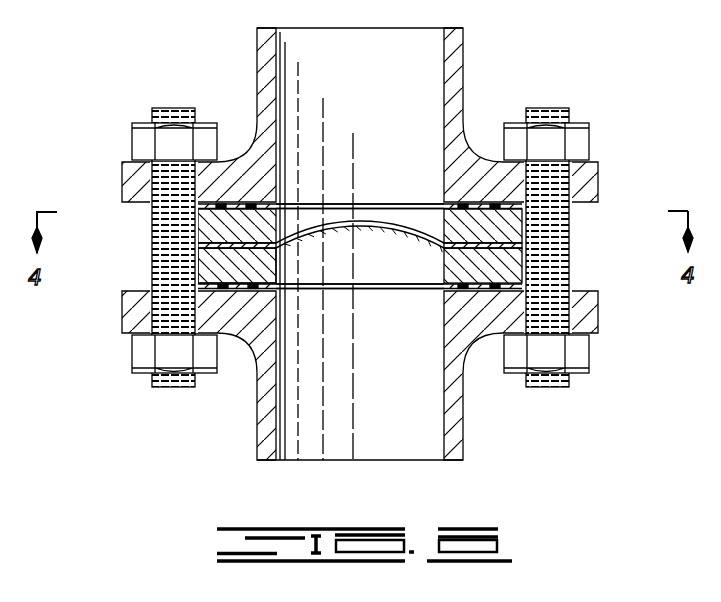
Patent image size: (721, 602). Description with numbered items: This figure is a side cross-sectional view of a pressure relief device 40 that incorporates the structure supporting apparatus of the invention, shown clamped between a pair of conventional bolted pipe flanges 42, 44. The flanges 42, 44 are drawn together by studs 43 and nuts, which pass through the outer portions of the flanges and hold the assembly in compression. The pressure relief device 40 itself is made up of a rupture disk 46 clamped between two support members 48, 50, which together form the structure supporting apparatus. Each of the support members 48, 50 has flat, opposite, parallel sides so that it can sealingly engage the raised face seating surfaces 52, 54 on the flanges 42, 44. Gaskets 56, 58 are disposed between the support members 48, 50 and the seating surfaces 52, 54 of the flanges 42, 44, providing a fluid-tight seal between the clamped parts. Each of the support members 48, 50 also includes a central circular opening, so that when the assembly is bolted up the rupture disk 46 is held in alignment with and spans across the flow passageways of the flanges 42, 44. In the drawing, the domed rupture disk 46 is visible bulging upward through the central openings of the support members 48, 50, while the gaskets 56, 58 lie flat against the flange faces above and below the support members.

The pressure relief device 40 is at (486, 226).
The pipe flange 42 is at (598, 170).
The studs 43 is at (166, 108).
The pipe flange 44 is at (598, 319).
The rupture disk 46 is at (357, 232).
The support member 48 is at (227, 224).
The support member 50 is at (218, 264).
The raised face seating surface 52 is at (268, 204).
The raised face seating surface 54 is at (262, 296).
The gasket 56 is at (396, 203).
The gasket 58 is at (389, 292).